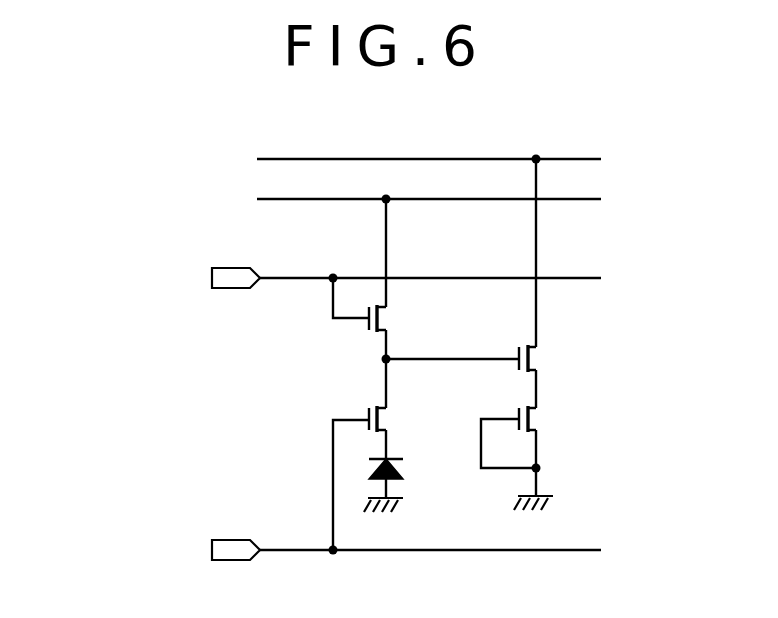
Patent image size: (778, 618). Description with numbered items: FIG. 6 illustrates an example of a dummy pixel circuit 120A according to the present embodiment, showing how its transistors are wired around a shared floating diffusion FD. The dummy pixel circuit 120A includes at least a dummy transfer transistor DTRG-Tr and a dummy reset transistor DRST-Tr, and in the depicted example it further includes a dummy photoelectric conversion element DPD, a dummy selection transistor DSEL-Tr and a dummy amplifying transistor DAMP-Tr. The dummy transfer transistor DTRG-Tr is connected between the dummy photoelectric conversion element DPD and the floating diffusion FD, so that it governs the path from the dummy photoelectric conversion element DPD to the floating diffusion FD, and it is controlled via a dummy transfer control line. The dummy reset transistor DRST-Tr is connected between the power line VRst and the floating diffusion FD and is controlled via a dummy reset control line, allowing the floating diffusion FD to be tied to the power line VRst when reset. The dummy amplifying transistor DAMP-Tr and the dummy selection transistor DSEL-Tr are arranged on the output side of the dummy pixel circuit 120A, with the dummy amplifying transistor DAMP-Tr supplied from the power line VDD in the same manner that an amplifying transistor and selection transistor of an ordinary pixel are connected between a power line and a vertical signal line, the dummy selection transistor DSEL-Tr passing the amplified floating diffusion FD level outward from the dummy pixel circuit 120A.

The dummy pixel circuit 120A is at (436, 607).
The power line VDD is at (429, 145).
The power line VRst is at (429, 185).
The dummy reset transistor DRST-Tr is at (366, 331).
The dummy transfer transistor DTRG-Tr is at (366, 431).
The dummy amplifying transistor DAMP-Tr is at (540, 358).
The dummy selection transistor DSEL-Tr is at (540, 419).
The floating diffusion FD is at (451, 346).
The dummy photoelectric conversion element DPD is at (414, 484).